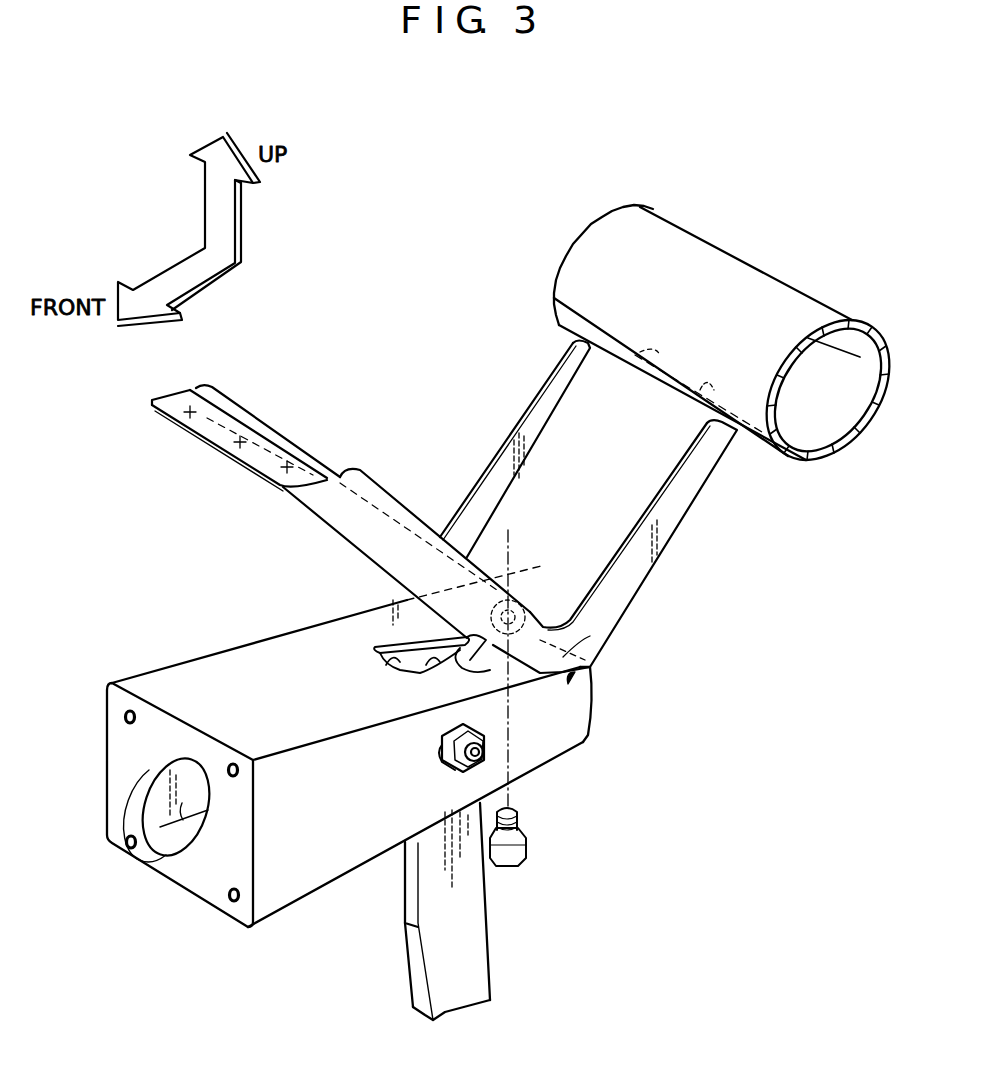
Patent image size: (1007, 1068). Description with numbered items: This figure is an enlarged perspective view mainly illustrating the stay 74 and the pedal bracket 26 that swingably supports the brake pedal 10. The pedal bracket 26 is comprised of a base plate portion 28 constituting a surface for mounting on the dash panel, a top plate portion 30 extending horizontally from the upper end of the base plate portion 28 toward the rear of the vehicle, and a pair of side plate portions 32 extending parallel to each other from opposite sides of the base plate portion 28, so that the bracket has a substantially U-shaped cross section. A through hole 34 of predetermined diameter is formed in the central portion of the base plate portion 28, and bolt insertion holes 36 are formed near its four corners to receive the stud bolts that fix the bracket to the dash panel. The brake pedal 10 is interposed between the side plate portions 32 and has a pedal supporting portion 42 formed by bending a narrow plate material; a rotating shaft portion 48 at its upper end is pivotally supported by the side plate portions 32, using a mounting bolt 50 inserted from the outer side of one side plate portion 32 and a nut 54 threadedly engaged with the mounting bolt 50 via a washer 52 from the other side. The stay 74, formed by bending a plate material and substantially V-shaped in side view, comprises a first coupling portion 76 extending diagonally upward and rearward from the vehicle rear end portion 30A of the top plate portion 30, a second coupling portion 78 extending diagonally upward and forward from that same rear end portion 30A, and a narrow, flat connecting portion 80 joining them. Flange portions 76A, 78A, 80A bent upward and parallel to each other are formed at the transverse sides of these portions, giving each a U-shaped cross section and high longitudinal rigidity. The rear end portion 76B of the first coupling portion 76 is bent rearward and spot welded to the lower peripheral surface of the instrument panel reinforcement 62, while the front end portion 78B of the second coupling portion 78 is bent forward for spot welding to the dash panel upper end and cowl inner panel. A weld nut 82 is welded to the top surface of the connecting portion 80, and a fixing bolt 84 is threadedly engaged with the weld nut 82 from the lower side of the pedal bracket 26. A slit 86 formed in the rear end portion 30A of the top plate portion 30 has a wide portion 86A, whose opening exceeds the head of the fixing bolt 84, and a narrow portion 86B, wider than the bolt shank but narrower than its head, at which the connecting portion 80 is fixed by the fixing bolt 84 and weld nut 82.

The brake pedal 10 is at (485, 911).
The pedal bracket 26 is at (367, 792).
The base plate portion 28 is at (176, 824).
The top plate portion 30 is at (328, 624).
The vehicle rear end portion 30A is at (383, 622).
The side plate portions 32 is at (172, 858).
The through hole 34 is at (194, 842).
The bolt insertion holes 36 is at (137, 712).
The pedal supporting portion 42 is at (492, 952).
The rotating shaft portion 48 is at (590, 740).
The mounting bolt 50 is at (512, 782).
The washer 52 is at (423, 767).
The nut 54 is at (452, 772).
The instrument panel reinforcement 62 is at (725, 245).
The stay 74 is at (348, 447).
The first coupling portion 76 is at (604, 522).
The flange portions 76A is at (503, 445).
The rear end portion 76B is at (668, 420).
The second coupling portion 78 is at (341, 507).
The flange portions 78A is at (240, 402).
The front end portion 78B is at (215, 448).
The connecting portion 80 is at (587, 658).
The flange portions 80A is at (600, 636).
The weld nut 82 is at (538, 612).
The fixing bolt 84 is at (527, 852).
The slit 86 is at (438, 692).
The wide portion 86A is at (400, 667).
The narrow portion 86B is at (498, 688).